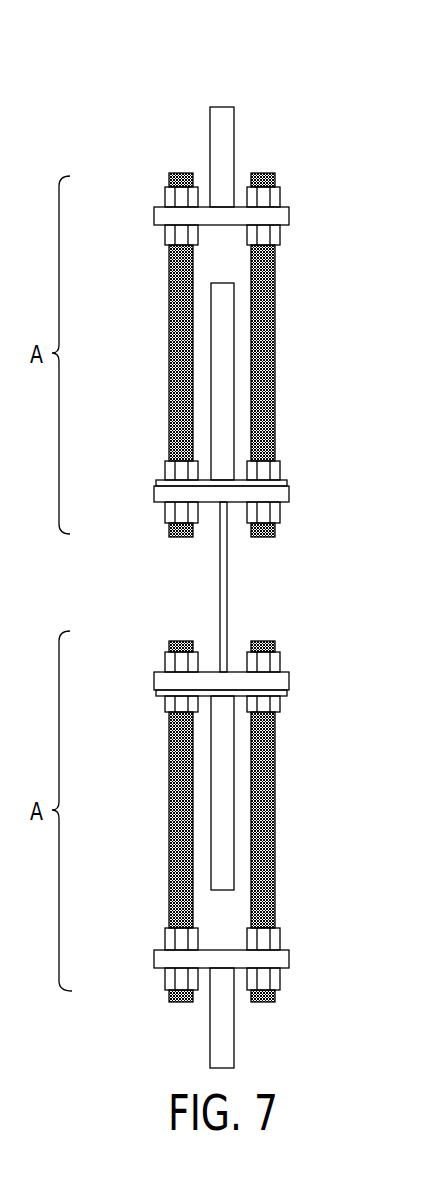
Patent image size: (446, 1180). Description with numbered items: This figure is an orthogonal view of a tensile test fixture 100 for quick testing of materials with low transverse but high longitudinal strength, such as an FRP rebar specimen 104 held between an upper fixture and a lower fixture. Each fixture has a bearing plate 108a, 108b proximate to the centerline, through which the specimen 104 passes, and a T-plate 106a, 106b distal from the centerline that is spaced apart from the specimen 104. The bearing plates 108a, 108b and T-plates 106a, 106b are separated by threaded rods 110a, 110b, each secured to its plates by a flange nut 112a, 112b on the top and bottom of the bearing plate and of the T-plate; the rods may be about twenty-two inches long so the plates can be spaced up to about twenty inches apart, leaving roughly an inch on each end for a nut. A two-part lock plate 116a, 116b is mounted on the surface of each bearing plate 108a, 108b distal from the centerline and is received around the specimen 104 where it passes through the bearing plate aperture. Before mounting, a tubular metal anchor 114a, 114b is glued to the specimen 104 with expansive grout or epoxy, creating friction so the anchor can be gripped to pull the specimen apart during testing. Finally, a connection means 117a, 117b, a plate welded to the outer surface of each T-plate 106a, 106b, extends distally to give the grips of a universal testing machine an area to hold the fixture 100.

The tensile test fixture 100 is at (283, 100).
The FRP rebar specimen 104 is at (221, 566).
The T-plate 106a is at (286, 215).
The T-plate 106b is at (286, 960).
The bearing plate 108a is at (160, 492).
The bearing plate 108b is at (160, 682).
The threaded rod 110a is at (172, 282).
The threaded rod 110b is at (172, 747).
The flange nut 112a is at (178, 198).
The flange nut 112b is at (175, 662).
The anchor 114a is at (218, 362).
The anchor 114b is at (213, 830).
The lock plate 116a is at (215, 483).
The lock plate 116b is at (250, 695).
The connection means 117a is at (237, 135).
The connection means 117b is at (235, 1042).